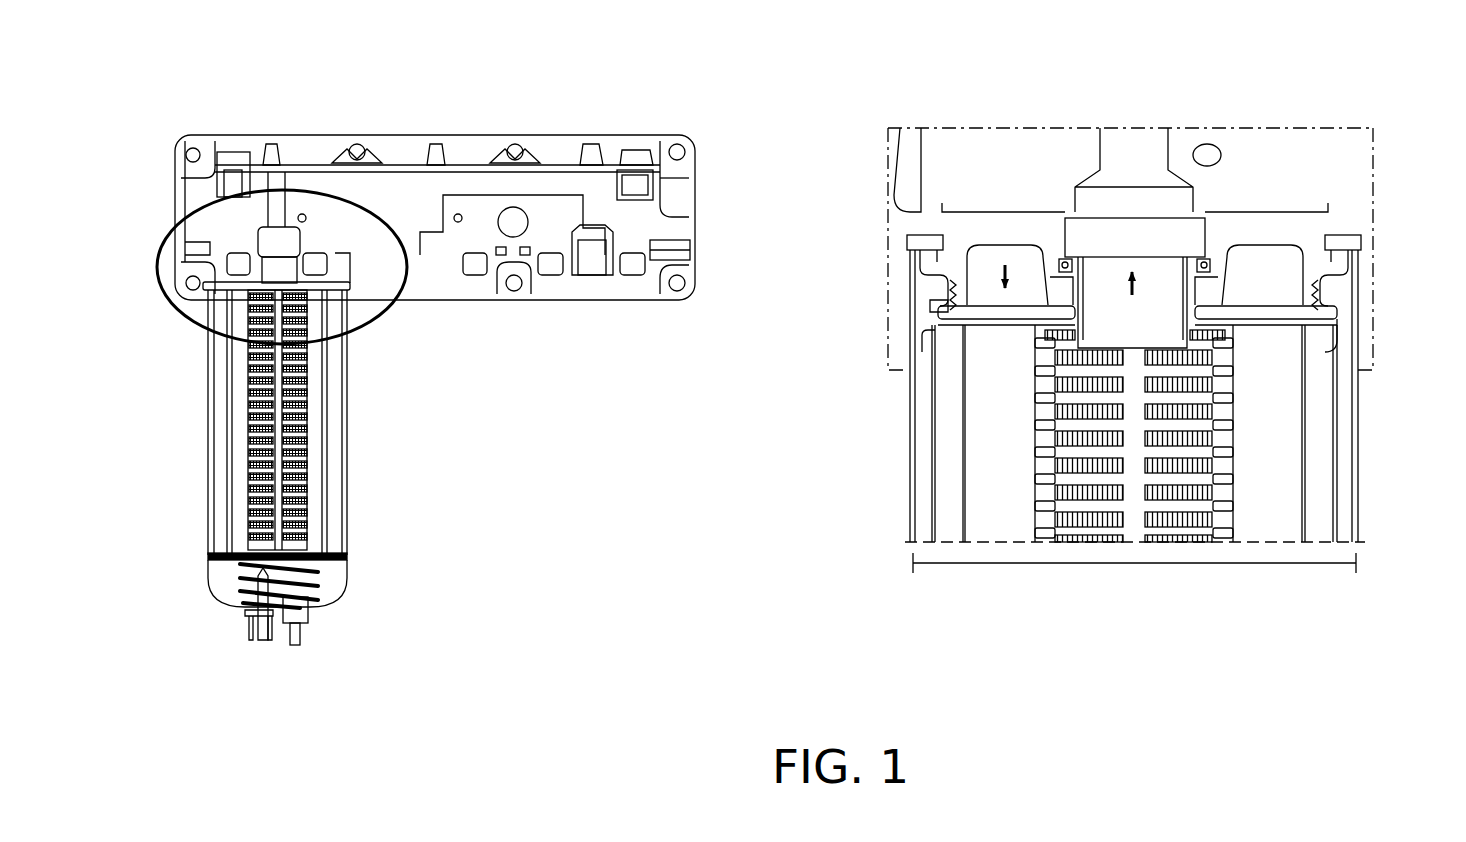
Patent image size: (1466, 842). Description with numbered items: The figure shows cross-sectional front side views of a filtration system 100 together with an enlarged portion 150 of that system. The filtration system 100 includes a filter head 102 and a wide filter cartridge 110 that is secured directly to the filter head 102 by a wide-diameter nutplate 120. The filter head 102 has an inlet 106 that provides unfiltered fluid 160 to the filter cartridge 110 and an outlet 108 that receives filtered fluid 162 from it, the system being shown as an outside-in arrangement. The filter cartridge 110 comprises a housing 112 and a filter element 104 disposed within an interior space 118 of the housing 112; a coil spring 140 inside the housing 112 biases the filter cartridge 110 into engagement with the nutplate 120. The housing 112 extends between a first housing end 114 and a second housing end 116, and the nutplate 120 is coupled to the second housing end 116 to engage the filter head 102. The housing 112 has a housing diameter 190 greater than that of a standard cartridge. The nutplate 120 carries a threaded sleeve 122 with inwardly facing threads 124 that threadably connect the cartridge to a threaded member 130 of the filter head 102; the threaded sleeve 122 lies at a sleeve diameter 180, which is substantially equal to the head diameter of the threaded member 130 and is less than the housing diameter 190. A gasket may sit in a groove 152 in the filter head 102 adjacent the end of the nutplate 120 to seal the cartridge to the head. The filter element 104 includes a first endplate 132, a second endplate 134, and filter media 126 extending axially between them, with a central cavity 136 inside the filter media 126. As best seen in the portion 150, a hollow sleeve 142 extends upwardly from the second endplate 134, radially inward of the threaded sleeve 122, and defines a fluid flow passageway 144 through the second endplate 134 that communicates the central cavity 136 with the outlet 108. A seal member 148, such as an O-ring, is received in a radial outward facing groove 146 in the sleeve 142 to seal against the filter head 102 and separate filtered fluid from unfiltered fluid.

The filtration system 100 is at (150, 110).
The filter head 102 is at (322, 213).
The filter element 104 is at (222, 408).
The inlet 106 is at (243, 248).
The outlet 108 is at (281, 205).
The filter cartridge 110 is at (796, 450).
The housing 112 is at (348, 378).
The first housing end 114 is at (328, 600).
The second housing end 116 is at (345, 258).
The interior space 118 is at (345, 548).
The nutplate 120 is at (942, 290).
The threaded sleeve 122 is at (935, 303).
The inwardly facing threads 124 is at (945, 310).
The filter media 126 is at (326, 492).
The threaded member 130 is at (1320, 292).
The first endplate 132 is at (240, 560).
The second endplate 134 is at (222, 292).
The central cavity 136 is at (1210, 422).
The coil spring 140 is at (340, 570).
The sleeve 142 is at (1230, 328).
The fluid flow passageway 144 is at (1113, 272).
The radial outward facing groove 146 is at (1205, 262).
The seal member 148 is at (1060, 262).
The portion 150 is at (165, 226).
The groove 152 is at (1365, 248).
The unfiltered fluid 160 is at (975, 283).
The filtered fluid 162 is at (1132, 309).
The sleeve diameter 180 is at (1222, 212).
The housing diameter 190 is at (1145, 565).